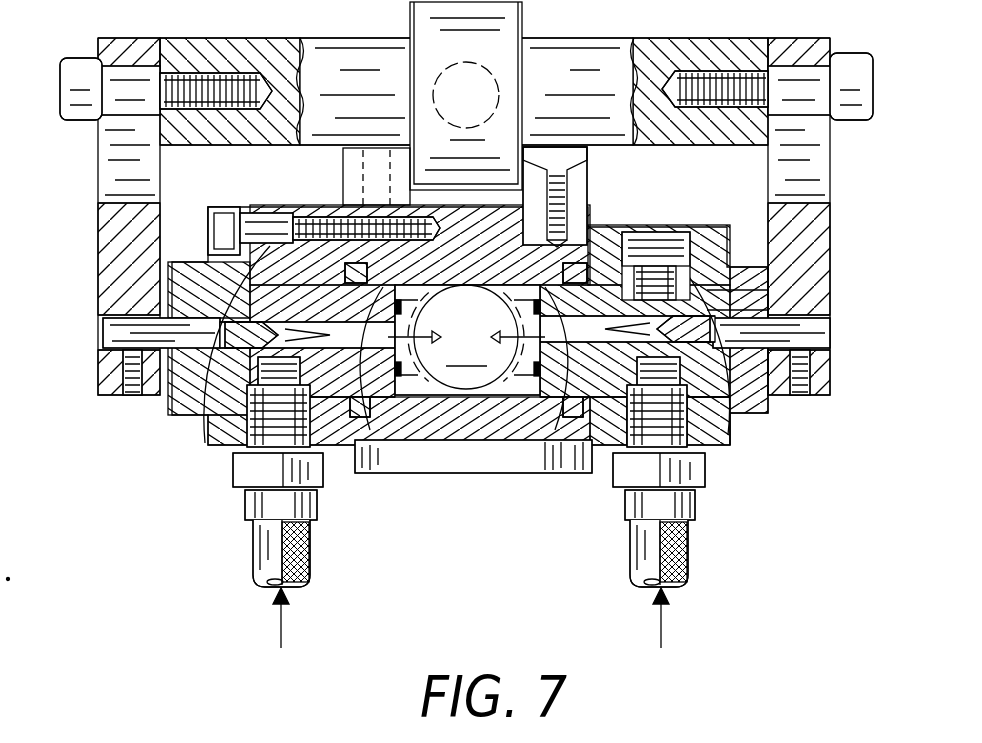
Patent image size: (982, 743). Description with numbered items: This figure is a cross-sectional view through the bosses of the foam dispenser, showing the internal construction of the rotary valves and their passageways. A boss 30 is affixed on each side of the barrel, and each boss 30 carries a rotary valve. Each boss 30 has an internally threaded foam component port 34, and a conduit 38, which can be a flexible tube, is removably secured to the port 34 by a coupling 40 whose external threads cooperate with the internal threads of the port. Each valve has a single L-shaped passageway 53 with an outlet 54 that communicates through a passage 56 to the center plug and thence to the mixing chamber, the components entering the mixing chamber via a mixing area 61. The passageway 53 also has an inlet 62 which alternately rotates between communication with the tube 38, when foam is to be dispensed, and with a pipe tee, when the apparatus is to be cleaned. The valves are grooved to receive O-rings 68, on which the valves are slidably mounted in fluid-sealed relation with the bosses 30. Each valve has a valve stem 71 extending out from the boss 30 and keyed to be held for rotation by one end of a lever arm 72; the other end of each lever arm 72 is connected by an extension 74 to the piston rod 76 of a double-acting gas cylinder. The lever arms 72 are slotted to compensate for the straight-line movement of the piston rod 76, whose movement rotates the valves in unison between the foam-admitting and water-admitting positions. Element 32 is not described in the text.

The boss 30 is at (173, 417).
The pivot shaft 32 is at (103, 336).
The foam component port 34 is at (722, 447).
The conduit 38 is at (253, 553).
The coupling 40 is at (247, 505).
The L-shaped passageway 53 is at (330, 452).
The outlet 54 is at (380, 473).
The passage 56 is at (496, 318).
The mixing area 61 is at (466, 355).
The inlet 62 is at (205, 412).
The O-ring 68 is at (312, 233).
The valve stem 71 is at (103, 340).
The lever arm 72 is at (833, 188).
The extension 74 is at (303, 40).
The piston rod 76 is at (520, 12).